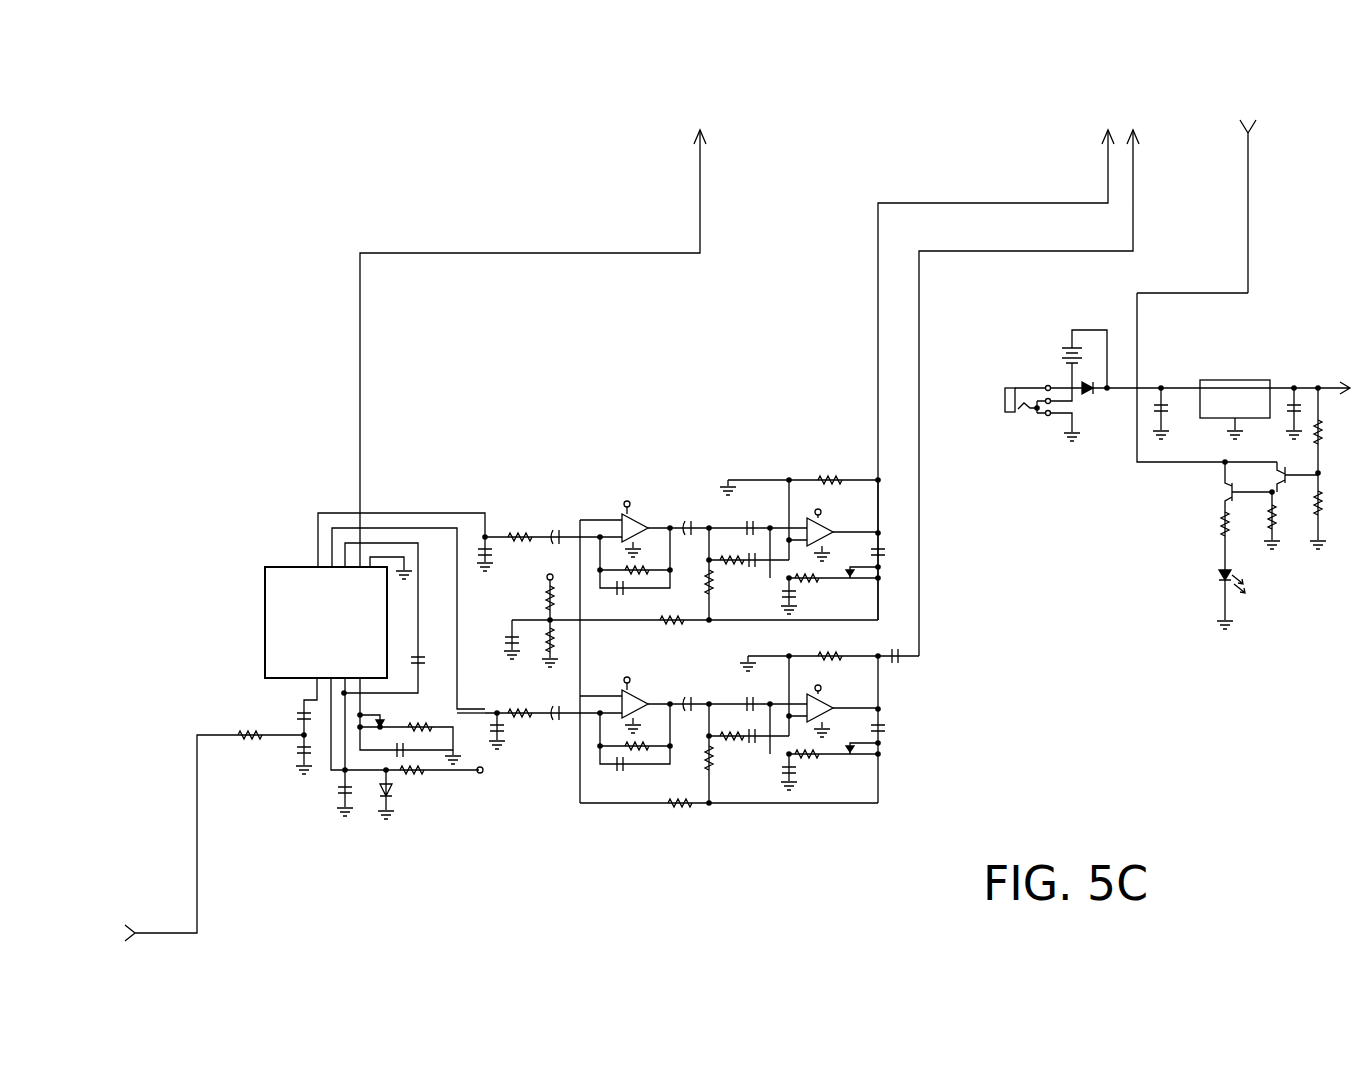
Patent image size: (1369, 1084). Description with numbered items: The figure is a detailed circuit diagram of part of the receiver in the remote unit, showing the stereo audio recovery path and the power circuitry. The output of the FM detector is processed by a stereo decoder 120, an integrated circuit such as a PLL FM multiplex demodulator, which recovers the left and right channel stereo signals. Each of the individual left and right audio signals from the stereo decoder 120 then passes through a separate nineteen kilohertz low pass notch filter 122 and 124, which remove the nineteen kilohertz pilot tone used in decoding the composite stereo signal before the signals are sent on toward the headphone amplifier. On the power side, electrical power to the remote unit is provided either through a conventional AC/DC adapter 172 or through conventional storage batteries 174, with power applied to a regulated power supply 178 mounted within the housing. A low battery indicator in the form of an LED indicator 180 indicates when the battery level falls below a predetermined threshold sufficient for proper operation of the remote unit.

The stereo decoder 120 is at (265, 568).
The low pass notch filter 122 is at (750, 805).
The low pass notch filter 124 is at (677, 515).
The AC/DC adapter 172 is at (1022, 420).
The storage batteries 174 is at (1058, 352).
The regulated power supply 178 is at (1218, 380).
The LED indicator 180 is at (1208, 575).